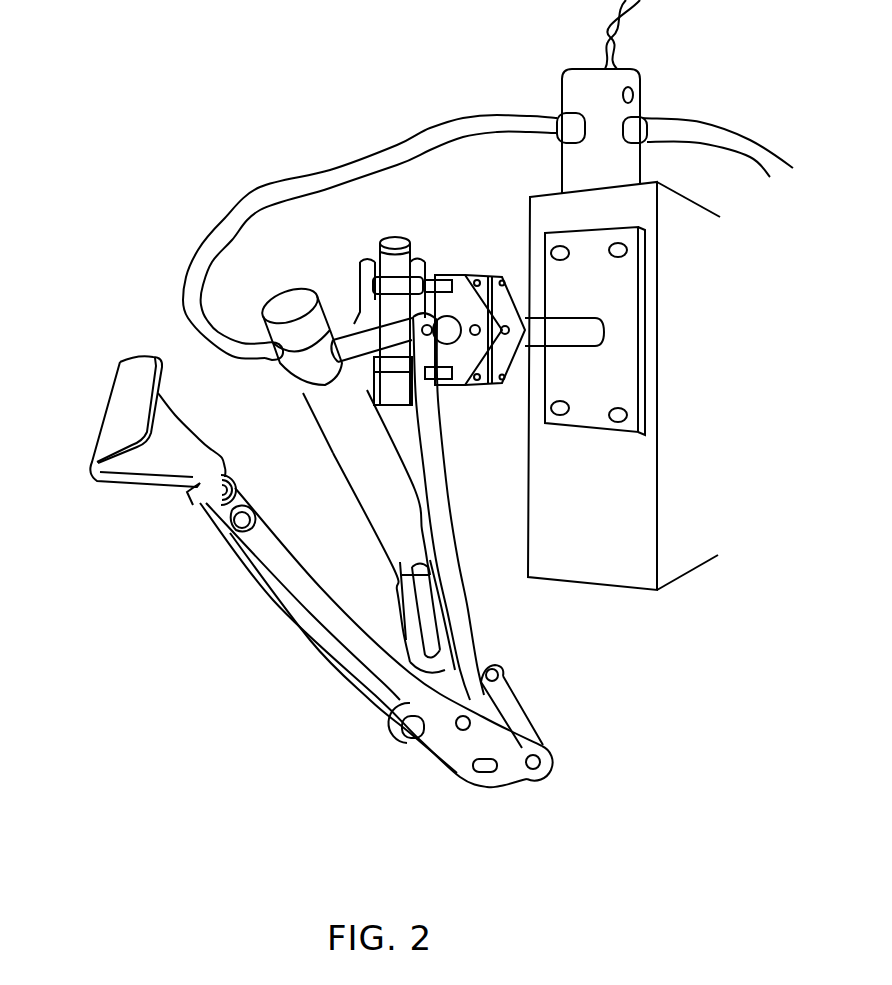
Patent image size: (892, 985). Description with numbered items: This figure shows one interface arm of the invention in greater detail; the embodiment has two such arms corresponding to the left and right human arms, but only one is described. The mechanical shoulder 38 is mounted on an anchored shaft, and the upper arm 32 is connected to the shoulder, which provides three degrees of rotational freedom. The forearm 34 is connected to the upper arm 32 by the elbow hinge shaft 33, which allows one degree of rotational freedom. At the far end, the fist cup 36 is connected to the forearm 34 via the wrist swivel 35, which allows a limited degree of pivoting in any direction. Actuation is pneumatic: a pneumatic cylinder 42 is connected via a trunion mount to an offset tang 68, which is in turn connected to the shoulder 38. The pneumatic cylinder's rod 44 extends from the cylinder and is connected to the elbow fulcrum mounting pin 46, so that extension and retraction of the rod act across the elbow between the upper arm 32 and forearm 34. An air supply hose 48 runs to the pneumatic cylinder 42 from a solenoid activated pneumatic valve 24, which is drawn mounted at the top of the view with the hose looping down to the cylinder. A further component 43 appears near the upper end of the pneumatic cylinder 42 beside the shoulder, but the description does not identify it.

The solenoid activated pneumatic valve 24 is at (572, 95).
The air supply hose 48 is at (397, 153).
The mechanical shoulder 38 is at (373, 230).
The offset tang 68 is at (413, 373).
The upper arm 32 is at (438, 548).
The pneumatic cylinder's rod 44 is at (483, 662).
The elbow fulcrum mounting pin 46 is at (533, 773).
The forearm 34 is at (382, 668).
The elbow hinge shaft 33 is at (445, 740).
The pneumatic cylinder 42 is at (357, 447).
The elbow fitting 43 is at (307, 377).
The fist cup 36 is at (140, 467).
The wrist swivel 35 is at (228, 530).